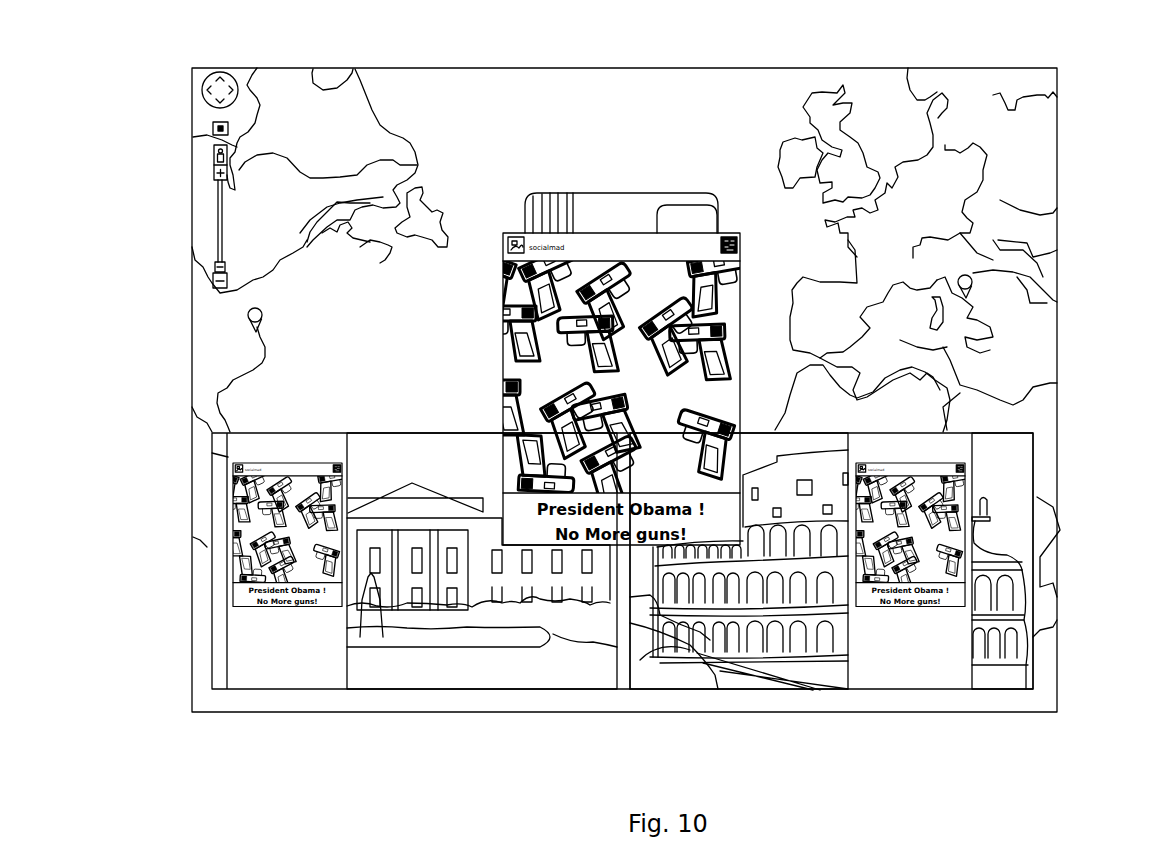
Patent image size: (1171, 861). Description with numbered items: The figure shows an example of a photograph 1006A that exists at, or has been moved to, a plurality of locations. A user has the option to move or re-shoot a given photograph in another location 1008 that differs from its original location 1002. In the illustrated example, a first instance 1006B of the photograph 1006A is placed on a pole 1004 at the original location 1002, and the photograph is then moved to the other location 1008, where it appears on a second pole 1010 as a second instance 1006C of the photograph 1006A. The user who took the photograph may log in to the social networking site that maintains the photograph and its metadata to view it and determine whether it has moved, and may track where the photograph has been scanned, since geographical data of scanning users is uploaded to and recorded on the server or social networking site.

The original location 1002 is at (248, 312).
The pole 1004 is at (238, 670).
The photograph 1006A is at (503, 355).
The first instance of photograph 1006B is at (240, 520).
The second instance of photograph 1006C is at (957, 504).
The another location 1008 is at (971, 276).
The pole 1010 is at (960, 637).